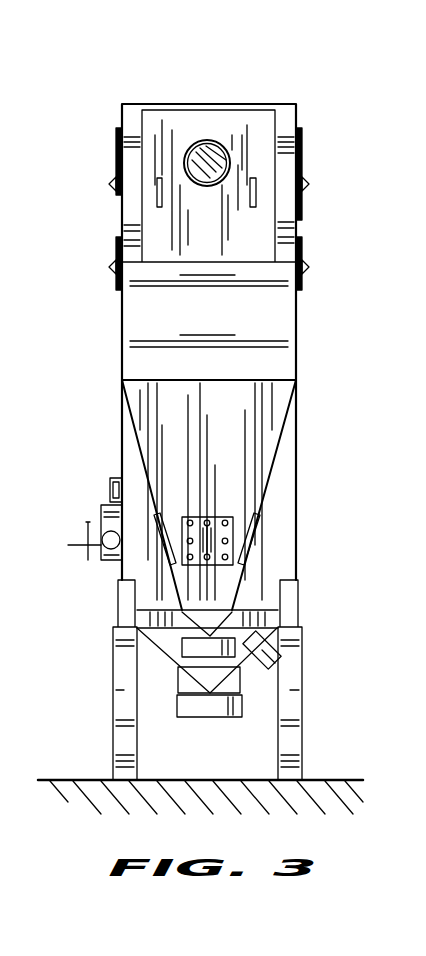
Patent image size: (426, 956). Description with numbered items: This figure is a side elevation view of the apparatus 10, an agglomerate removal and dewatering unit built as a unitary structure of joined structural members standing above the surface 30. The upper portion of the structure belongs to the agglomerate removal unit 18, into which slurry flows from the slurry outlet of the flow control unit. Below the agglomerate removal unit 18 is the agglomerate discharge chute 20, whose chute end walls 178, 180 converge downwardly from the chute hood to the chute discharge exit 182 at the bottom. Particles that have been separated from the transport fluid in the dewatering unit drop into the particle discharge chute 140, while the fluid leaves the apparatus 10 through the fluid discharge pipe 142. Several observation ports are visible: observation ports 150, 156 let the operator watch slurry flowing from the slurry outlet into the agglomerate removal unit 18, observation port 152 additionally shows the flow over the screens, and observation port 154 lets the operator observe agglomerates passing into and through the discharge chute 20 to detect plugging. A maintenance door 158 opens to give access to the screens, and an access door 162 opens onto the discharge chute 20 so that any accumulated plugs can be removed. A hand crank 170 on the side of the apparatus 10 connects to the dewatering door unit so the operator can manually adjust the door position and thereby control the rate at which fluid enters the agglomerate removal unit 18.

The apparatus 10 is at (323, 112).
The agglomerate removal unit 18 is at (306, 497).
The agglomerate discharge chute 20 is at (132, 423).
The surface 30 is at (337, 780).
The particle discharge chute 140 is at (273, 653).
The fluid discharge pipe 142 is at (185, 718).
The observation port 150 is at (116, 148).
The observation port 152 is at (116, 253).
The observation port 154 is at (107, 527).
The observation port 156 is at (222, 163).
The maintenance door 158 is at (160, 228).
The access door 162 is at (233, 547).
The hand crank 170 is at (87, 557).
The chute end wall 178 is at (148, 477).
The chute end wall 180 is at (283, 423).
The chute discharge exit 182 is at (182, 646).